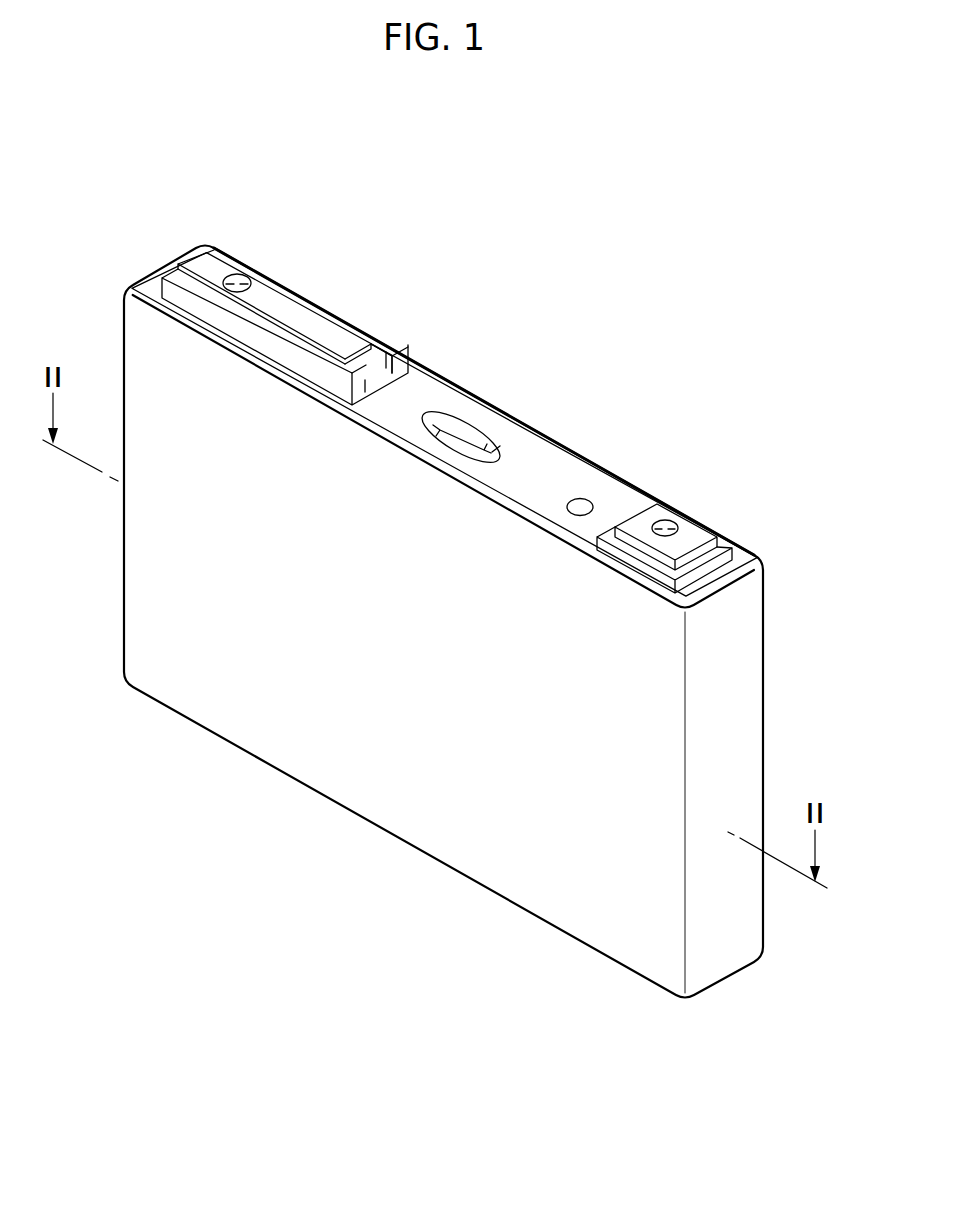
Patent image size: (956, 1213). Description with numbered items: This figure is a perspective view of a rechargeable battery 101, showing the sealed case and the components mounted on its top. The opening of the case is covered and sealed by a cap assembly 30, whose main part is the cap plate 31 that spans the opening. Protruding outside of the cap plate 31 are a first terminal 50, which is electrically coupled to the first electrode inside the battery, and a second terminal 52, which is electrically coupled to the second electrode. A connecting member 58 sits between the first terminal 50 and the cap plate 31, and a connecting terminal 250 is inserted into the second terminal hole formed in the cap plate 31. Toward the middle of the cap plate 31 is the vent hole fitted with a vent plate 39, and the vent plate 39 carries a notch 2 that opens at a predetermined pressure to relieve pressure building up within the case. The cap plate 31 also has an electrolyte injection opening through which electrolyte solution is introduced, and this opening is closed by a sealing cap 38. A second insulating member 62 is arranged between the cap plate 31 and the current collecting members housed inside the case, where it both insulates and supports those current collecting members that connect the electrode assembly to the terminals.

The rechargeable battery 101 is at (449, 213).
The notch 2 is at (498, 447).
The cap assembly 30 is at (573, 445).
The cap plate 31 is at (430, 388).
The sealing cap 38 is at (590, 500).
The vent plate 39 is at (476, 430).
The first terminal 50 is at (700, 533).
The second terminal 52 is at (308, 310).
The connecting member 58 is at (722, 541).
The second insulating member 62 is at (400, 348).
The connecting terminal 250 is at (238, 274).